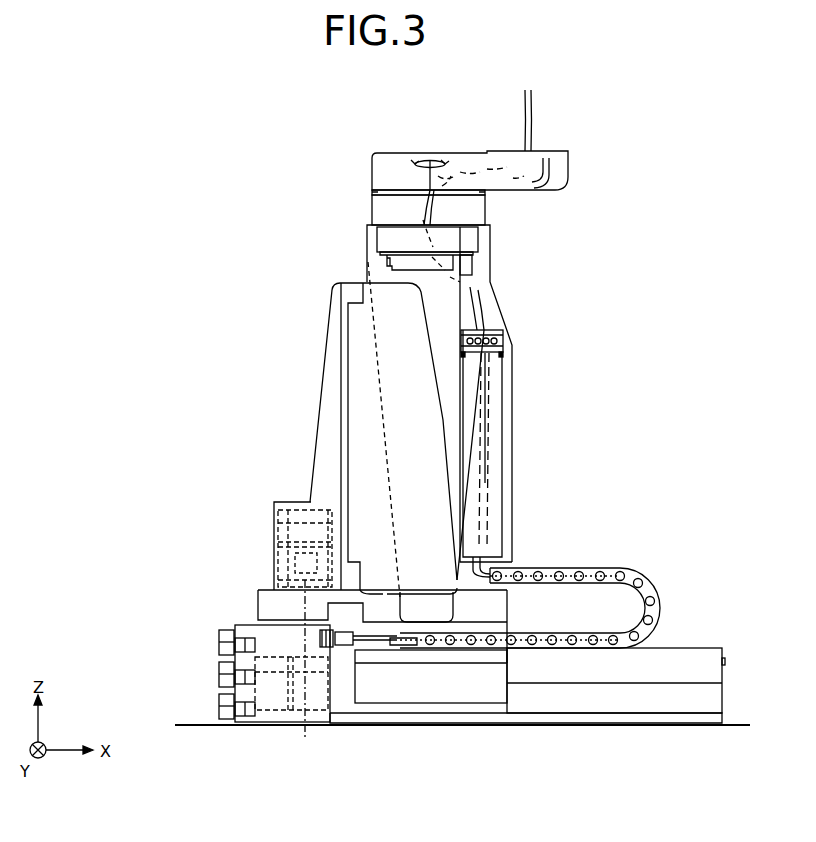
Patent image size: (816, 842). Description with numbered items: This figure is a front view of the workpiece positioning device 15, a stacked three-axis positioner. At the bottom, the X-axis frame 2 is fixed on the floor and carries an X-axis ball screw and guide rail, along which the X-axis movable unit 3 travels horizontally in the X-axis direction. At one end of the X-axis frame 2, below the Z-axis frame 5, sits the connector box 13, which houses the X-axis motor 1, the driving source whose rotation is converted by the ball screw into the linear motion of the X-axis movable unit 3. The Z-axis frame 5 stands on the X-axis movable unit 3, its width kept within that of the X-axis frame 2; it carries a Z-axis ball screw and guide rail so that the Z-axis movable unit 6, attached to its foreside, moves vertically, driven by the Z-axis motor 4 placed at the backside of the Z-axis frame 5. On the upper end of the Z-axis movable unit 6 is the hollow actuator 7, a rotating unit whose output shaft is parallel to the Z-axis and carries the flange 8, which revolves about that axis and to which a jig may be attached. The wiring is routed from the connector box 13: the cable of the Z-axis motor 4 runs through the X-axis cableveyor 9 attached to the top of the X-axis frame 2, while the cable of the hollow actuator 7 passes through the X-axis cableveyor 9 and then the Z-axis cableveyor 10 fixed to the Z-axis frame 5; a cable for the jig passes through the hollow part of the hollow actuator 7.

The X-axis motor 1 is at (305, 724).
The X-axis frame 2 is at (563, 700).
The X-axis movable unit 3 is at (433, 683).
The Z-axis motor 4 is at (275, 533).
The Z-axis frame 5 is at (340, 420).
The Z-axis movable unit 6 is at (452, 433).
The hollow actuator 7 is at (388, 209).
The flange 8 is at (545, 172).
The X-axis cableveyor 9 is at (613, 568).
The Z-axis cableveyor 10 is at (498, 390).
The connector box 13 is at (272, 632).
The workpiece positioning device 15 is at (602, 250).